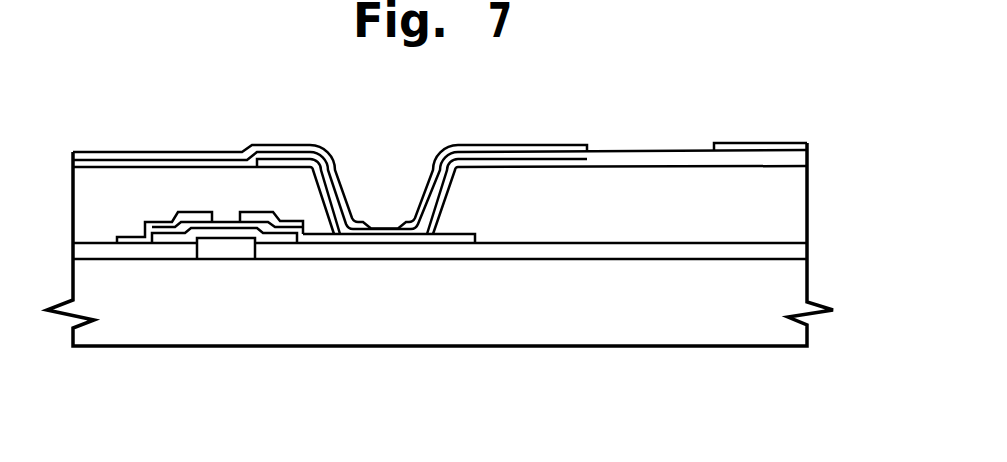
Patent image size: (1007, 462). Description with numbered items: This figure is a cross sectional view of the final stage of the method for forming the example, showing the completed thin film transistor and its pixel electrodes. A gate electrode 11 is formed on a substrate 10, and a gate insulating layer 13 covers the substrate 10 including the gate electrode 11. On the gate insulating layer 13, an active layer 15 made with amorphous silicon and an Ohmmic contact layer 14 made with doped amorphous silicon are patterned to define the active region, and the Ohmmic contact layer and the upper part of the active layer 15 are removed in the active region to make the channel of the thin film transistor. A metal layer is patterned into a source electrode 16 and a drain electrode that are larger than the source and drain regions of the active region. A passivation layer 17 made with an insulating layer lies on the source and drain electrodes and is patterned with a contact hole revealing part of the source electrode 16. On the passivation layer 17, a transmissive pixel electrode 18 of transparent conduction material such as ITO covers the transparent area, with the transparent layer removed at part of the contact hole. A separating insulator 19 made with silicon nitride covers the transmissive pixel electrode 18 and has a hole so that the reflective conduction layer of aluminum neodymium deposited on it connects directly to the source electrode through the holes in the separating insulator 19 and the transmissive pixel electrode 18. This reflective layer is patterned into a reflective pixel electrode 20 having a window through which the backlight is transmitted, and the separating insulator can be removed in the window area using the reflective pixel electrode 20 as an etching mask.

The substrate 10 is at (788, 283).
The gate electrode 11 is at (225, 250).
The gate insulating layer 13 is at (788, 250).
The Ohmmic contact layer 14 is at (165, 233).
The active layer 15 is at (287, 240).
The source electrode 16 is at (388, 237).
The passivation layer 17 is at (790, 203).
The transmissive pixel electrode 18 is at (806, 158).
The separating insulator 19 is at (806, 153).
The reflective pixel electrode 20 is at (800, 140).